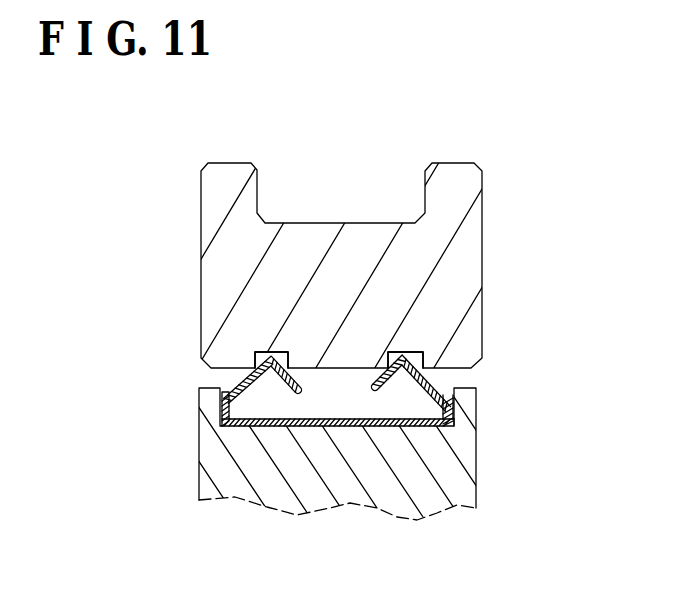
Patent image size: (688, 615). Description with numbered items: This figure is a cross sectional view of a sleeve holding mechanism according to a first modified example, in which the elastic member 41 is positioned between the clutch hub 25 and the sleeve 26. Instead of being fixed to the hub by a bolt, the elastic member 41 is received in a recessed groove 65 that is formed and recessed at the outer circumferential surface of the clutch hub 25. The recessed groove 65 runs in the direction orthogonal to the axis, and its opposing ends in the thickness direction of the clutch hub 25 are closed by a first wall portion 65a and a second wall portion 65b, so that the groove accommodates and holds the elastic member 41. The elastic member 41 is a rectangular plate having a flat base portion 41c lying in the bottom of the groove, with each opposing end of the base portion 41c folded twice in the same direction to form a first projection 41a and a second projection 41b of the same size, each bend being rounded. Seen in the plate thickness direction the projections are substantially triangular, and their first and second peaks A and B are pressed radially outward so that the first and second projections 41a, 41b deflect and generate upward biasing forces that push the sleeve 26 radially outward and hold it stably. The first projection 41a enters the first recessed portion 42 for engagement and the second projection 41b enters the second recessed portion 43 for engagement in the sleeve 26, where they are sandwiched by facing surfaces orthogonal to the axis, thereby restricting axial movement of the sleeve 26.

The sleeve 26 is at (210, 197).
The clutch hub 25 is at (460, 433).
The second recessed portion for engagement 43 is at (263, 353).
The first recessed portion for engagement 42 is at (393, 353).
The elastic member 41 is at (337, 405).
The first projection 41a is at (427, 358).
The second projection 41b is at (237, 388).
The base portion 41c is at (380, 427).
The recessed groove 65 is at (319, 463).
The first wall portion 65a is at (455, 415).
The second wall portion 65b is at (210, 403).
The first peak A is at (405, 354).
The second peak B is at (272, 355).